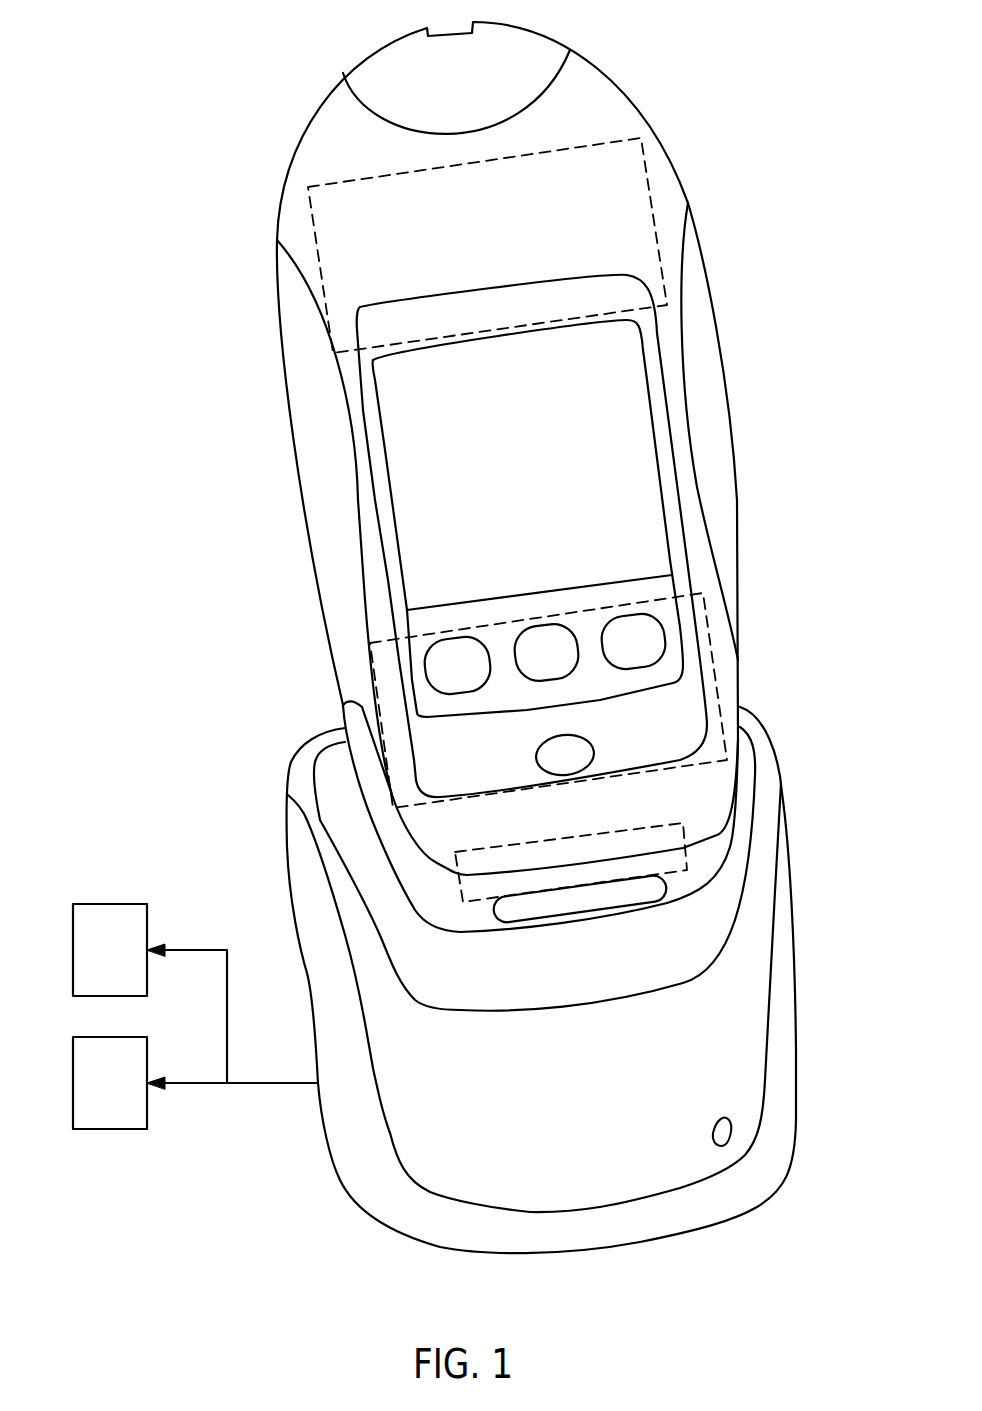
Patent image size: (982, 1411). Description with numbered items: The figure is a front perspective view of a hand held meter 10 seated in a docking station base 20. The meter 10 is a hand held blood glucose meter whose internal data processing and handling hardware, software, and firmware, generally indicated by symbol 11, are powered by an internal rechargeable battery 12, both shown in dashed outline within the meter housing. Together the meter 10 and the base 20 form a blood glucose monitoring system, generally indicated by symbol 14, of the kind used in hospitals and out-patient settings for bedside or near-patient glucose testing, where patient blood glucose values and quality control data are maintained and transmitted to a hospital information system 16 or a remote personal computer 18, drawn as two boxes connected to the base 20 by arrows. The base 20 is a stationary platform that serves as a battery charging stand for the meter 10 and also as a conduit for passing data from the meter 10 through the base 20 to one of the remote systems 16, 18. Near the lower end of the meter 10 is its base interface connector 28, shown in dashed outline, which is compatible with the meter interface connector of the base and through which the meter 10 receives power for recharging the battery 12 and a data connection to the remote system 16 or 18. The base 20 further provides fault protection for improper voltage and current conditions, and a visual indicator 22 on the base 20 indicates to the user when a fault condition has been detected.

The hand held meter 10 is at (732, 667).
The internal data processing and handling hardware, software, and firmware 11 is at (578, 300).
The internal rechargeable battery 12 is at (582, 620).
The blood glucose monitoring system 14 is at (180, 132).
The hospital information system 16 is at (100, 903).
The remote personal computer 18 is at (113, 1130).
The docking station base 20 is at (791, 977).
The visual indicator 22 is at (713, 1130).
The base interface connector 28 is at (676, 867).